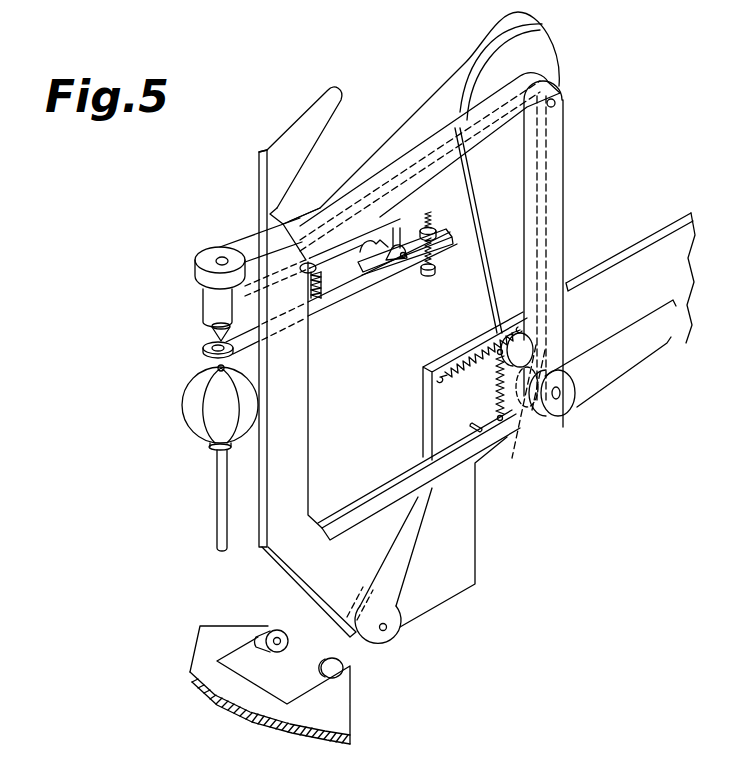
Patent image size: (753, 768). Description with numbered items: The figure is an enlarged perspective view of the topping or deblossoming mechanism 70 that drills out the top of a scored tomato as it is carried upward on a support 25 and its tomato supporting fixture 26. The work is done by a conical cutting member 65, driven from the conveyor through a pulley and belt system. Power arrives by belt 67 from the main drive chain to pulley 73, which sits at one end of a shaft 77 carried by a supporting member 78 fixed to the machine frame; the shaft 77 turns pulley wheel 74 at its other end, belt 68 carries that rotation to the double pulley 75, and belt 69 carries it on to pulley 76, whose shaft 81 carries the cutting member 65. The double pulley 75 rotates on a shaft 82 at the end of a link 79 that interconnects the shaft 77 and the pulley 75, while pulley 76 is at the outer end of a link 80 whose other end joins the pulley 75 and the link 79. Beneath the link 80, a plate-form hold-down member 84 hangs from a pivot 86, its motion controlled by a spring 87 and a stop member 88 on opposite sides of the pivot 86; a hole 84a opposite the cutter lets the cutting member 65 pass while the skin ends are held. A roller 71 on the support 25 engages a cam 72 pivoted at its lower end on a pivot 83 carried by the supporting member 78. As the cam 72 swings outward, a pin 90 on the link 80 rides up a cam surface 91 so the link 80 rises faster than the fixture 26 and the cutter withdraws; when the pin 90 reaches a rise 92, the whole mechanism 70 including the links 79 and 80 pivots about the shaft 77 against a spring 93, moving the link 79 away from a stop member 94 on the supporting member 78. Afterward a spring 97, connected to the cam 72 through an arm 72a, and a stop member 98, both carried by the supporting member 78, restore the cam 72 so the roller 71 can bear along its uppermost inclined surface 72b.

The support 25 is at (202, 648).
The tomato supporting fixture 26 is at (218, 471).
The conical cutting member 65 is at (210, 333).
The belt 67 is at (628, 371).
The belt 68 is at (489, 262).
The belt 69 is at (384, 138).
The topping or deblossoming mechanism 70 is at (352, 83).
The roller 71 is at (328, 665).
The cam 72 is at (302, 370).
The arm 72a is at (383, 496).
The uppermost inclined surface 72b is at (307, 104).
The pulley 73 is at (563, 412).
The pulley wheel 74 is at (522, 410).
The double pulley 75 is at (529, 51).
The pulley 76 is at (217, 257).
The shaft 77 is at (560, 395).
The supporting member 78 is at (623, 273).
The link 79 is at (553, 212).
The link 80 is at (486, 167).
The shaft 81 is at (216, 262).
The shaft 82 is at (556, 104).
The pivot 83 is at (386, 631).
The hold-down member 84 is at (322, 313).
The hole 84a is at (210, 353).
The pivot 86 is at (405, 262).
The spring 87 is at (325, 291).
The stop member 88 is at (432, 275).
The pin 90 is at (383, 239).
The cam surface 91 is at (287, 230).
The rise 92 is at (266, 150).
The spring 93 is at (470, 352).
The stop member 94 is at (530, 350).
The spring 97 is at (497, 379).
The stop member 98 is at (473, 427).